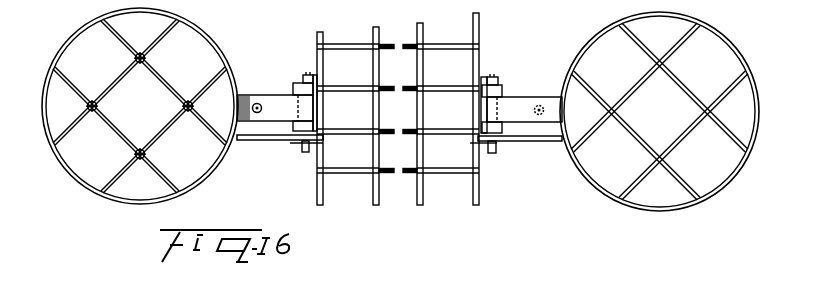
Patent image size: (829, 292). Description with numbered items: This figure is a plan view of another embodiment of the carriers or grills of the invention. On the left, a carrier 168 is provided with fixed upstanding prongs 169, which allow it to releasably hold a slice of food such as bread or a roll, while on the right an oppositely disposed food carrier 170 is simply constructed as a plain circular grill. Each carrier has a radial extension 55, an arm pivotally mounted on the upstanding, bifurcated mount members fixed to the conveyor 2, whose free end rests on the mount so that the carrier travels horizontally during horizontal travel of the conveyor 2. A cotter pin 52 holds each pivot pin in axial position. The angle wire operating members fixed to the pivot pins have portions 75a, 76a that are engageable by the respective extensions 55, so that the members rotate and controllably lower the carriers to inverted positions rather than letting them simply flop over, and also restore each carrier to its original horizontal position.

The conveyor 2 is at (432, 43).
The cotter pin 52 is at (295, 142).
The radial extension 55 is at (273, 96).
The portion of angle wire operating member 75a is at (307, 88).
The portion of angle wire operating member 76a is at (494, 84).
The carrier 168 is at (213, 36).
The upstanding prongs 169 is at (183, 106).
The food carrier 170 is at (590, 40).